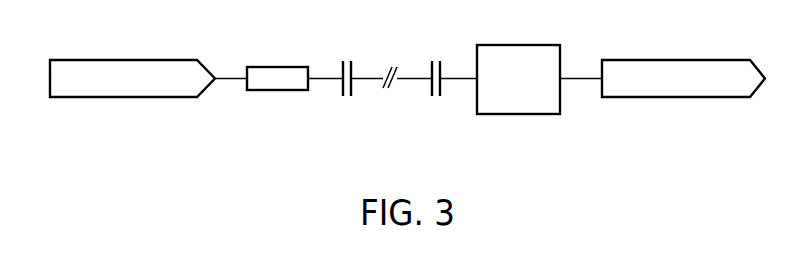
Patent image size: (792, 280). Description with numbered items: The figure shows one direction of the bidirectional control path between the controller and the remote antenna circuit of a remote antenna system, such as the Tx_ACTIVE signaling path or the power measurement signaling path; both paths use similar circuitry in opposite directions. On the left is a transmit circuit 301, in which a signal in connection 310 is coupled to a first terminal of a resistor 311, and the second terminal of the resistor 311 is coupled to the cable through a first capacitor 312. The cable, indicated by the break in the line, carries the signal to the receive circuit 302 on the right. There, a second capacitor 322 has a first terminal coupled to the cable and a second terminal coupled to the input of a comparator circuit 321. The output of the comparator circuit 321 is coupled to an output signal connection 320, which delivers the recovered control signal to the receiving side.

The signal in connection 310 is at (130, 60).
The resistor 311 is at (280, 67).
The first capacitor 312 is at (343, 62).
The second capacitor 322 is at (432, 62).
The comparator circuit 321 is at (520, 45).
The output signal connection 320 is at (705, 42).
The transmit circuit 301 is at (252, 111).
The receive circuit 302 is at (570, 136).